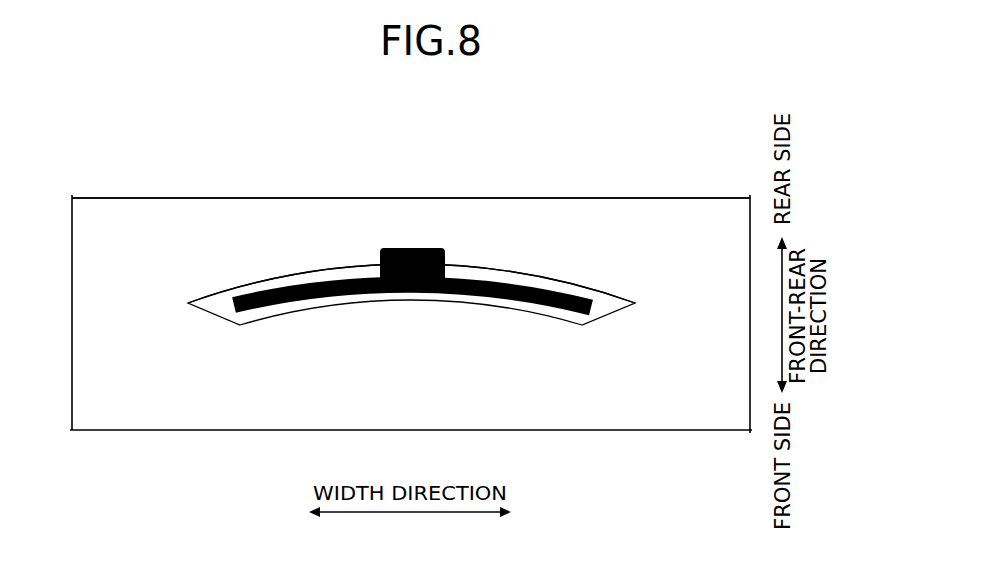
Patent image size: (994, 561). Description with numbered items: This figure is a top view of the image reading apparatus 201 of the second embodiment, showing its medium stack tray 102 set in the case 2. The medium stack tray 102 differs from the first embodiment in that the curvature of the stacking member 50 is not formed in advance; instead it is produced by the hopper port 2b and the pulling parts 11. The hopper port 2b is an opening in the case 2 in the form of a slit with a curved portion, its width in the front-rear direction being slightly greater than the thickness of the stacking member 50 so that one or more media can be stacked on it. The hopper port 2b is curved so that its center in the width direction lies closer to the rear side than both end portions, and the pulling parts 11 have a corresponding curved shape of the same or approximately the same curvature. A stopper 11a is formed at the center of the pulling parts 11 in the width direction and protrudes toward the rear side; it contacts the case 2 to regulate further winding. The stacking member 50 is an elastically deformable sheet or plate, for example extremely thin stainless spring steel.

The image reading apparatus 201 is at (76, 156).
The case 2 is at (158, 198).
The hopper port 2b is at (276, 286).
The medium stack tray 102 is at (411, 285).
The pulling parts 11 is at (512, 272).
The stopper 11a is at (420, 250).
The stacking member 50 is at (543, 306).